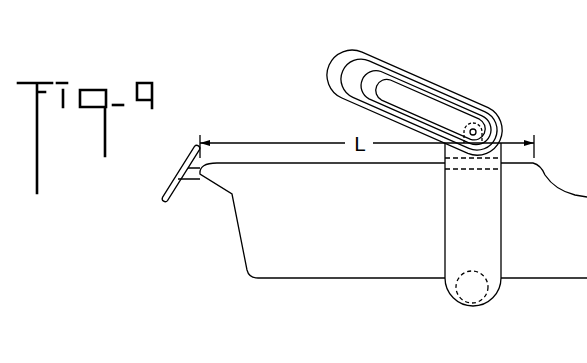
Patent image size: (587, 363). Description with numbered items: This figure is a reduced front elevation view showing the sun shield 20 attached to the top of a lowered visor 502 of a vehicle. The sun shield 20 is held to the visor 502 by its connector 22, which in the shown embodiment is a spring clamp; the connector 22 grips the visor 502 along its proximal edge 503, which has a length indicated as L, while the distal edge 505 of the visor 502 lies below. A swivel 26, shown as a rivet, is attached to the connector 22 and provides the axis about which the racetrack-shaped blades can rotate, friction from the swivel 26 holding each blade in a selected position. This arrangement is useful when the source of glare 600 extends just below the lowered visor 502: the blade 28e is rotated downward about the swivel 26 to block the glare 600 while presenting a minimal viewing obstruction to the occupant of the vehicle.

The sun shield 20 is at (455, 78).
The connector 22 is at (481, 164).
The swivel 26 is at (479, 132).
The blade 28e is at (460, 256).
The visor 502 is at (260, 229).
The proximal edge 503 is at (373, 164).
The distal edge 505 is at (327, 279).
The glare 600 is at (470, 292).